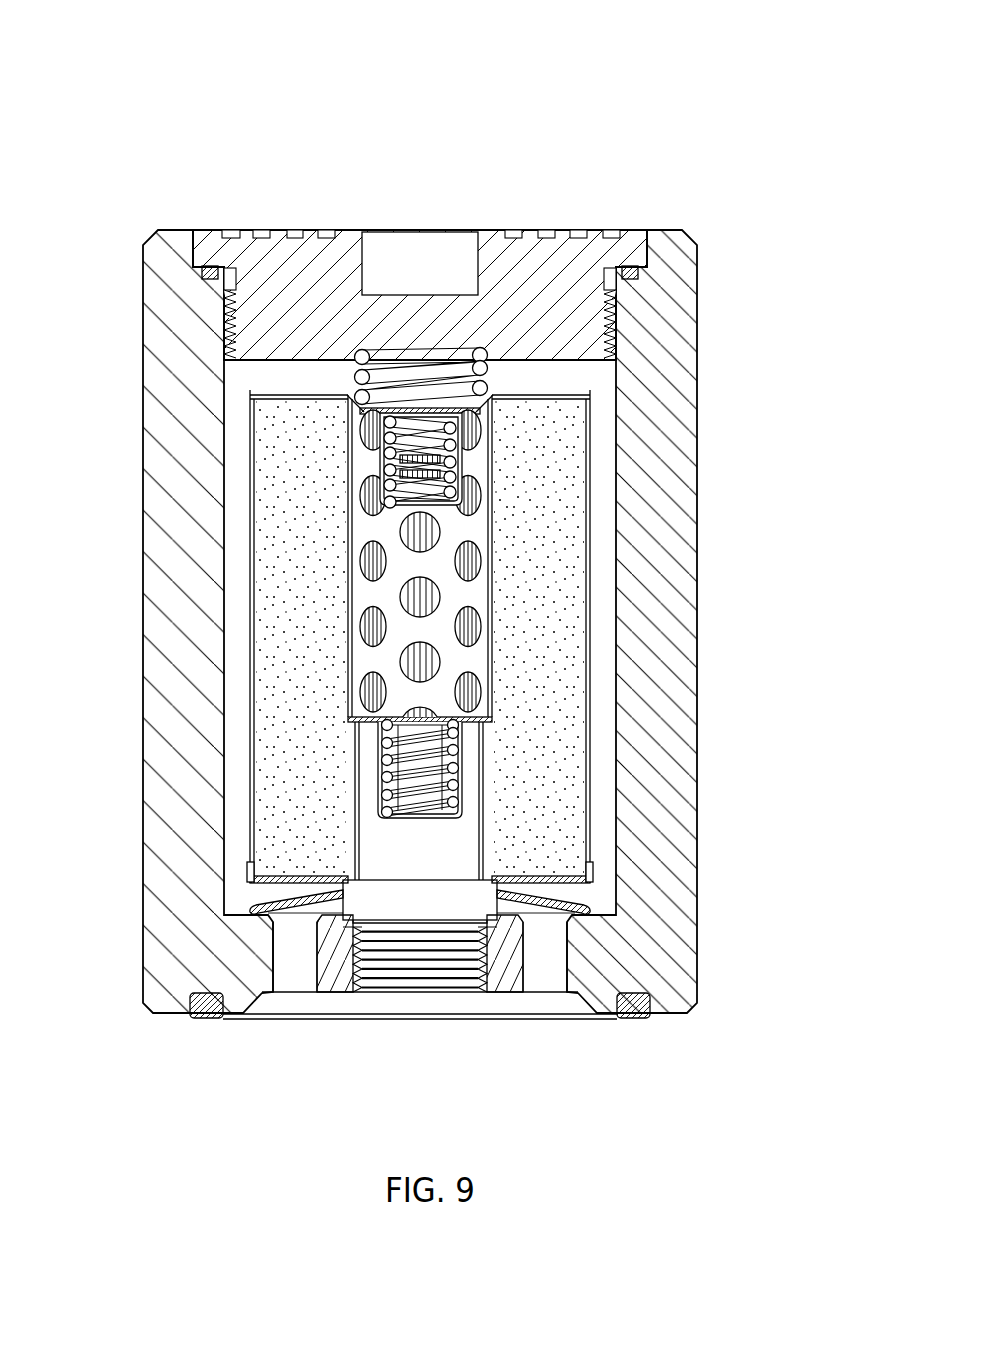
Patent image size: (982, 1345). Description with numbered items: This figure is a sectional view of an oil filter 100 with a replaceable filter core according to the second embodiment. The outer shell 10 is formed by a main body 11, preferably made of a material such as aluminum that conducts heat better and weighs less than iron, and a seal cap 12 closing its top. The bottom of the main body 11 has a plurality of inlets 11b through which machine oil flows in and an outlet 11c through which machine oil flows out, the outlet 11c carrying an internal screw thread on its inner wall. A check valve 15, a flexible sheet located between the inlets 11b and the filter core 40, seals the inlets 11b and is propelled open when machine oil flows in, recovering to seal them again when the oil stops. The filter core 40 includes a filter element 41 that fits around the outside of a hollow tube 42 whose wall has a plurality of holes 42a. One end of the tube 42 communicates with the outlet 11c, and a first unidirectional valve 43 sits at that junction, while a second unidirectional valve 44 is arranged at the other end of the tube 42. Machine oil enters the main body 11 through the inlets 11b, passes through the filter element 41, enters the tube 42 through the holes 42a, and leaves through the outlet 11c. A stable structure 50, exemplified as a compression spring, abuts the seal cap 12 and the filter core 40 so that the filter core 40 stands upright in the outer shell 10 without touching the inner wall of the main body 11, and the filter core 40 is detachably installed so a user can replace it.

The oil filter 100 is at (435, 570).
The outer shell 10 is at (439, 600).
The main body 11 is at (439, 632).
The inlets 11b is at (296, 963).
The outlet 11c is at (420, 965).
The seal cap 12 is at (598, 232).
The check valve 15 is at (575, 906).
The filter core 40 is at (435, 656).
The filter element 41 is at (540, 520).
The tube 42 is at (408, 659).
The holes 42a is at (410, 598).
The first unidirectional valve 43 is at (463, 760).
The second unidirectional valve 44 is at (455, 468).
The stable structure 50 is at (355, 377).